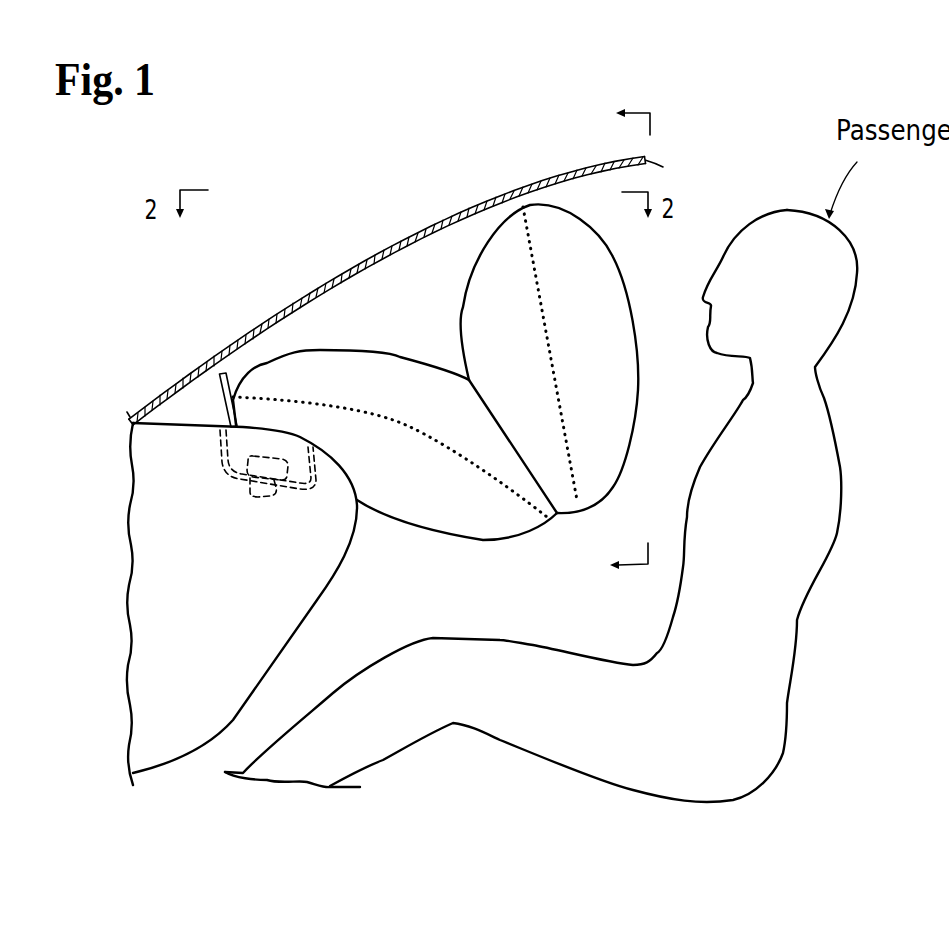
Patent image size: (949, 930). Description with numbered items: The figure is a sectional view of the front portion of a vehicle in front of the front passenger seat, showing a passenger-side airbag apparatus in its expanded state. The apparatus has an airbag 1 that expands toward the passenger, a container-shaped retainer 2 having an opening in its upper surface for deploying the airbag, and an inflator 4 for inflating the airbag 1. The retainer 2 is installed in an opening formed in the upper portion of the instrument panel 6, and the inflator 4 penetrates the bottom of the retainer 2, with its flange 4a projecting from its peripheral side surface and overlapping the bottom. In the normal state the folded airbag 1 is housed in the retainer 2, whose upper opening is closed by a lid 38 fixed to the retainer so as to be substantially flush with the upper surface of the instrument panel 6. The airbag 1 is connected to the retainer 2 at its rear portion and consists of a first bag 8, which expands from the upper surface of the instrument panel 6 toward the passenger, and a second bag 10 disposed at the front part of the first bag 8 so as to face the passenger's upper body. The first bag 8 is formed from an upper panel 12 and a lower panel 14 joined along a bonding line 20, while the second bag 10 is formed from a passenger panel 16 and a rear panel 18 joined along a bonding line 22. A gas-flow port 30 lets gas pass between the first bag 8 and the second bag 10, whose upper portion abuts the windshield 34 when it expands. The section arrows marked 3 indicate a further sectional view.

The airbag 1 is at (557, 535).
The retainer 2 is at (213, 460).
The section line 3 is at (630, 341).
The inflator 4 is at (263, 497).
The flange 4a is at (243, 490).
The instrument panel 6 is at (168, 422).
The first bag 8 is at (309, 338).
The second bag 10 is at (449, 274).
The upper panel 12 is at (337, 365).
The lower panel 14 is at (400, 500).
The passenger panel 16 is at (598, 277).
The rear panel 18 is at (477, 310).
The bonding line 20 is at (443, 443).
The bonding line 22 is at (540, 303).
The gas-flow port 30 is at (527, 442).
The windshield 34 is at (582, 170).
The lid 38 is at (221, 393).